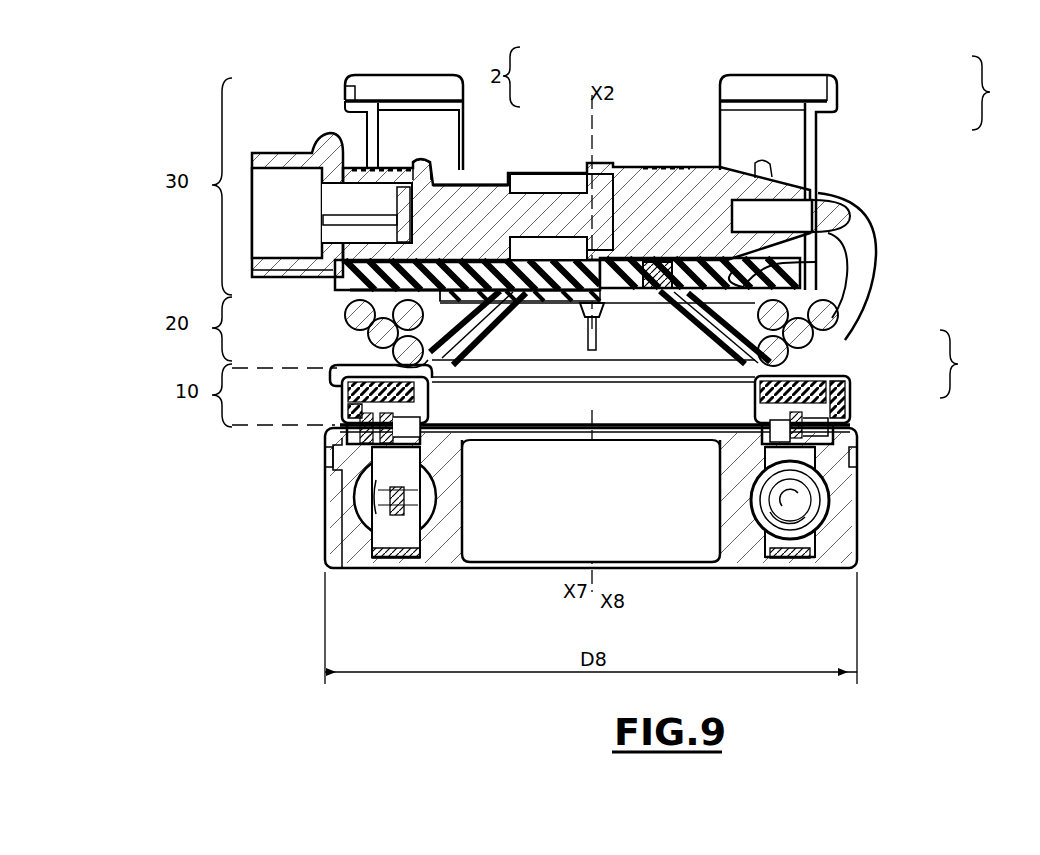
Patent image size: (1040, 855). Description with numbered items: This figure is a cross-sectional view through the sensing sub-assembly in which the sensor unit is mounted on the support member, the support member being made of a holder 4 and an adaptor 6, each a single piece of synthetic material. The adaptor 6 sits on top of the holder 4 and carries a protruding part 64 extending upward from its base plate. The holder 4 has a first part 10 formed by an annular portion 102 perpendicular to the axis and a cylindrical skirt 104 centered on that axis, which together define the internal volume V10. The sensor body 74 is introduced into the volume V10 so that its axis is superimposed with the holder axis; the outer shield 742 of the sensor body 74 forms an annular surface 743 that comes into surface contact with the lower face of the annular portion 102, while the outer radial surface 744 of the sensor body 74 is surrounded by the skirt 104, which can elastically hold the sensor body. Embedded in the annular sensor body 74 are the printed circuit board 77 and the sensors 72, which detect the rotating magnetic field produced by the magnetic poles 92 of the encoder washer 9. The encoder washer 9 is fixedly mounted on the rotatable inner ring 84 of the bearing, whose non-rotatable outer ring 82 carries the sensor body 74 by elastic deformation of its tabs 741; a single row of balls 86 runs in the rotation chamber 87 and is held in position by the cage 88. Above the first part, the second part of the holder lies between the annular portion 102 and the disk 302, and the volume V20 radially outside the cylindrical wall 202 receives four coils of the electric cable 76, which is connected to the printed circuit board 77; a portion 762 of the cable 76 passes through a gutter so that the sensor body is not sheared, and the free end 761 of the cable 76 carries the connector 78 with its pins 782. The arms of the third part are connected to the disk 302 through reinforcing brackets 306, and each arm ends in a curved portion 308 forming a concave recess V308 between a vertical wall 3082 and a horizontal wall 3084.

The holder 4 is at (712, 292).
The adaptor 6 is at (470, 268).
The encoder washer 9 is at (462, 442).
The first part 10 is at (977, 365).
The protruding part 64 is at (658, 268).
The sensors 72 is at (428, 402).
The sensor body 74 is at (355, 422).
The electric cable 76 is at (352, 312).
The printed circuit board 77 is at (440, 387).
The connector 78 is at (636, 190).
The outer ring 82 is at (352, 540).
The inner ring 84 is at (438, 538).
The balls 86 is at (438, 488).
The rotation chamber 87 is at (772, 550).
The cage 88 is at (420, 452).
The magnetic poles 92 is at (825, 450).
The annular portion 102 is at (812, 377).
The cylindrical skirt 104 is at (850, 402).
The cylindrical wall 202 is at (838, 306).
The disk 302 is at (790, 292).
The reinforcing bracket 306 is at (432, 168).
The curved portion 308 is at (410, 85).
The tabs 741 is at (355, 470).
The outer shield 742 is at (348, 398).
The annular surface 743 is at (475, 292).
The outer radial surface 744 is at (848, 414).
The free end 761 is at (795, 215).
The portion of cable 762 is at (865, 243).
The pins 782 is at (352, 215).
The vertical wall 3082 is at (345, 86).
The horizontal wall 3084 is at (838, 110).
The internal volume V10 is at (790, 422).
The volume of second part V20 is at (372, 350).
The concave recess V308 is at (790, 88).